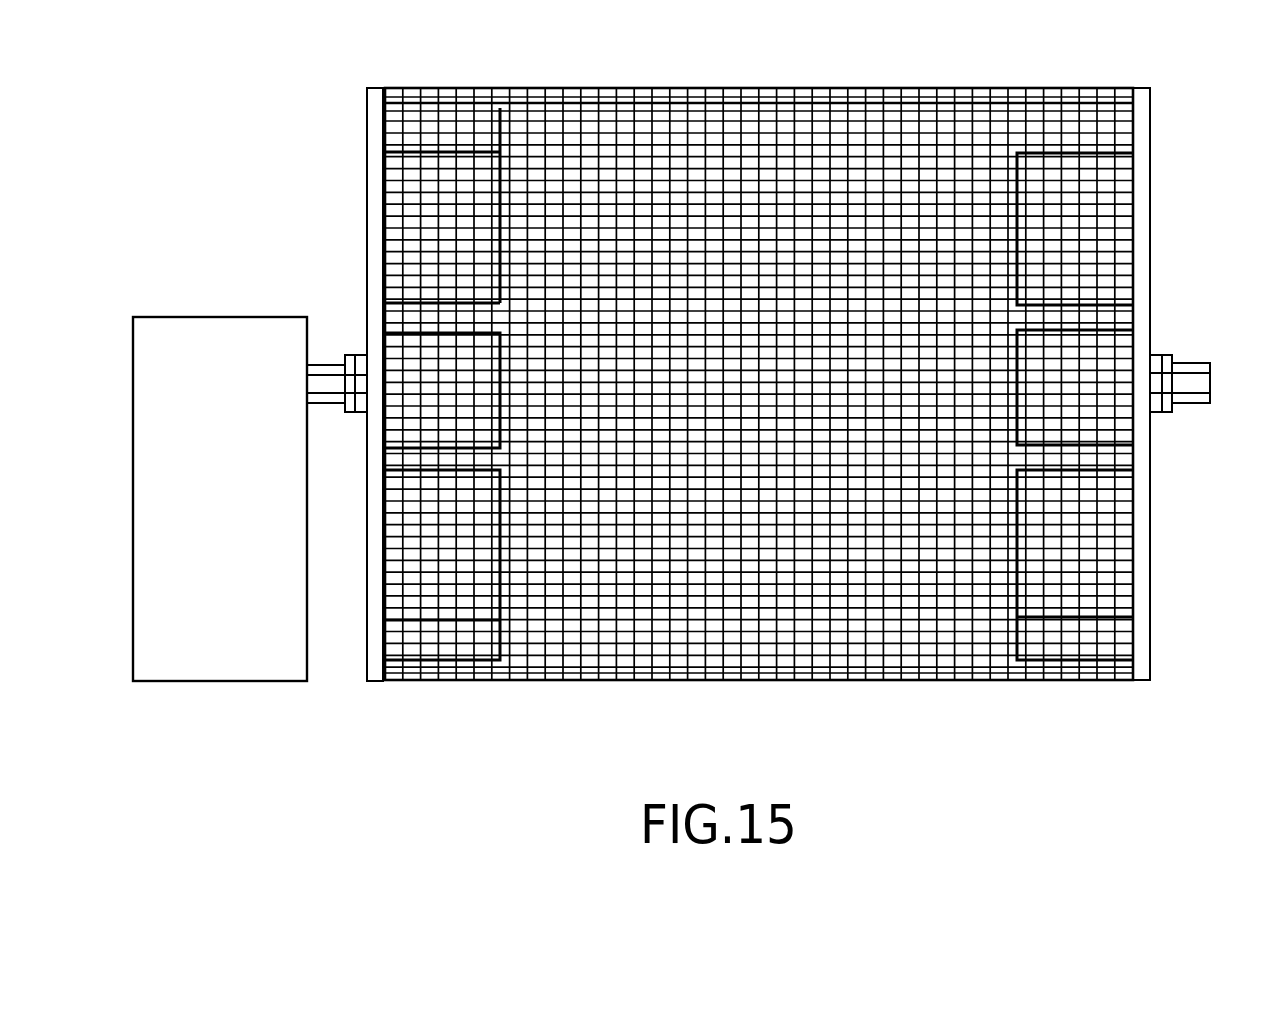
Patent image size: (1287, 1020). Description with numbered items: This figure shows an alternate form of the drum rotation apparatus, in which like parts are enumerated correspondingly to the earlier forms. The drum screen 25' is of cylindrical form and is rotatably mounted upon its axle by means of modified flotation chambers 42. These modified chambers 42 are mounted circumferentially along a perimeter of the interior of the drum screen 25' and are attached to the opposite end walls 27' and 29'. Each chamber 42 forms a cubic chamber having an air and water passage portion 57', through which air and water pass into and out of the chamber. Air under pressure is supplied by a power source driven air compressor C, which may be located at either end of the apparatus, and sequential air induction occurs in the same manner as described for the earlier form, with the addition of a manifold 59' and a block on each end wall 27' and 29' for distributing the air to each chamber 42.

The drum screen 25' is at (759, 426).
The end wall 27' is at (327, 384).
The end wall 29' is at (1193, 384).
The modified flotation chamber 42 is at (1107, 242).
The air and water passage portion 57' is at (471, 338).
The manifold 59' is at (785, 326).
The air compressor C is at (220, 340).